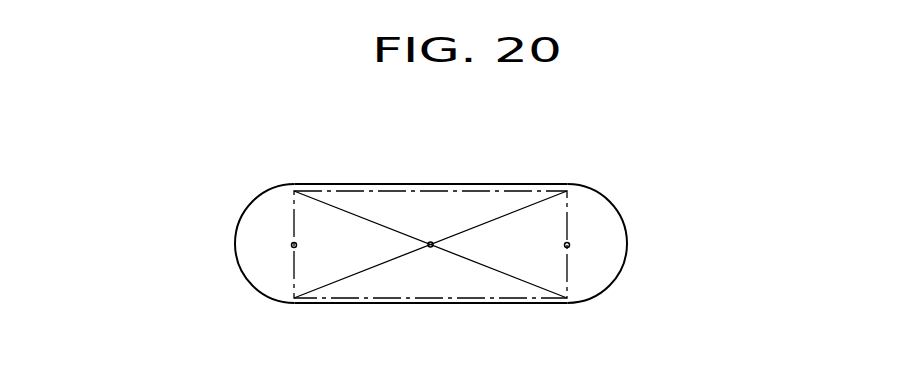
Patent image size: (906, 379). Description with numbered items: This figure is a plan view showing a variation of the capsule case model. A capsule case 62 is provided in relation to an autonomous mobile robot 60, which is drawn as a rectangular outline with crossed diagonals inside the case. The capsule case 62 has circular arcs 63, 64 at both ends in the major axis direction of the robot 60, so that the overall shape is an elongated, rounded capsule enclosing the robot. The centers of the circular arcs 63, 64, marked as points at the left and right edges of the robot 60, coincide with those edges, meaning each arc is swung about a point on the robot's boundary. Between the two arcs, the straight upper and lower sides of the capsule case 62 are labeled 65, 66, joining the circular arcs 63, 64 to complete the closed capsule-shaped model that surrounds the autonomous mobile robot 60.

The autonomous mobile robot 60 is at (488, 203).
The capsule case 62 is at (433, 245).
The circular arc 63 is at (627, 240).
The circular arc 64 is at (235, 239).
The upper side surface 65 is at (441, 185).
The lower side surface 66 is at (357, 304).